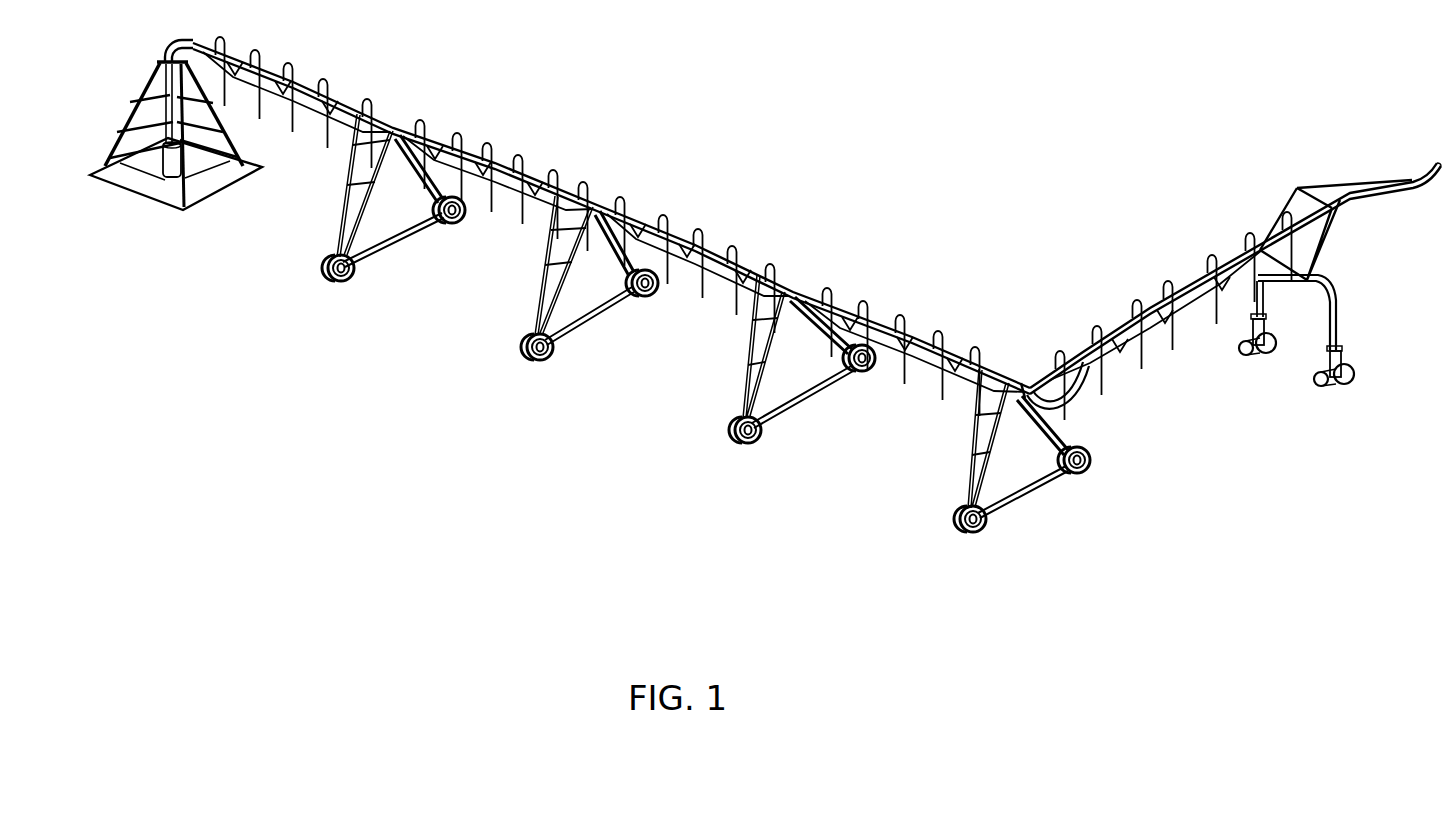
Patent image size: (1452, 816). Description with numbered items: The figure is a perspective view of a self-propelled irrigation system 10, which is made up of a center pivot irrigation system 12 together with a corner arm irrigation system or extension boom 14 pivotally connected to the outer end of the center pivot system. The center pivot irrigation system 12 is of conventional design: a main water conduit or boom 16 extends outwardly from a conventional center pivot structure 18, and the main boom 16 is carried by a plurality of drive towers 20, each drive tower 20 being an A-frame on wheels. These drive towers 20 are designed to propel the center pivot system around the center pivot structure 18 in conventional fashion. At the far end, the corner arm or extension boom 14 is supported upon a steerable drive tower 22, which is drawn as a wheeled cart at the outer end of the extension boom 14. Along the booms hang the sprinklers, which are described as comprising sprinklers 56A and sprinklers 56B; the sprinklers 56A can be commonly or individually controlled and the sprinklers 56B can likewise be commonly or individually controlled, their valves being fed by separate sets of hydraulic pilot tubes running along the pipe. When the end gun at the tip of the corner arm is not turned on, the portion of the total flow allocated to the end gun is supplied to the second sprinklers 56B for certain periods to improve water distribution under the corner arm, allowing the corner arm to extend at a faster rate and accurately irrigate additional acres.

The self-propelled irrigation system 10 is at (952, 262).
The center pivot irrigation system 12 is at (657, 195).
The corner arm irrigation system or extension boom 14 is at (1192, 270).
The main water conduit or boom 16 is at (354, 90).
The center pivot structure 18 is at (229, 128).
The drive tower 20 is at (331, 211).
The steerable drive tower 22 is at (1325, 329).
The sprinkler 56A is at (1097, 380).
The sprinkler 56B is at (1137, 362).